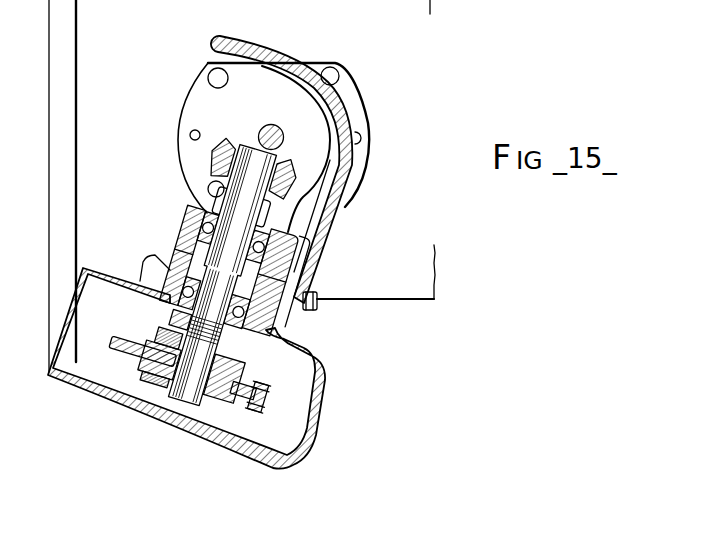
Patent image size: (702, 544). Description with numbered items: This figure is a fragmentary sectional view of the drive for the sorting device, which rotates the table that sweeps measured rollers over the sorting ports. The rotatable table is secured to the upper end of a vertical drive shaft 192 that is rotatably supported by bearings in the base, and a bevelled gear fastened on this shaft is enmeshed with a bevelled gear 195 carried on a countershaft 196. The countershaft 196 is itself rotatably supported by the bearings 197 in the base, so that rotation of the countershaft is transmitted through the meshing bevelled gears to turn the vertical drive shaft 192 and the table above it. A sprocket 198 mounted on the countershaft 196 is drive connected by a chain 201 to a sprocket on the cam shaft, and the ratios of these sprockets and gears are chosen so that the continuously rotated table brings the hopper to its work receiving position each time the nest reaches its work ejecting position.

The vertical drive shaft 192 is at (271, 128).
The bevelled gear 195 is at (228, 158).
The countershaft 196 is at (258, 189).
The bearings 197 is at (303, 286).
The sprocket 198 is at (138, 350).
The chain 201 is at (258, 409).